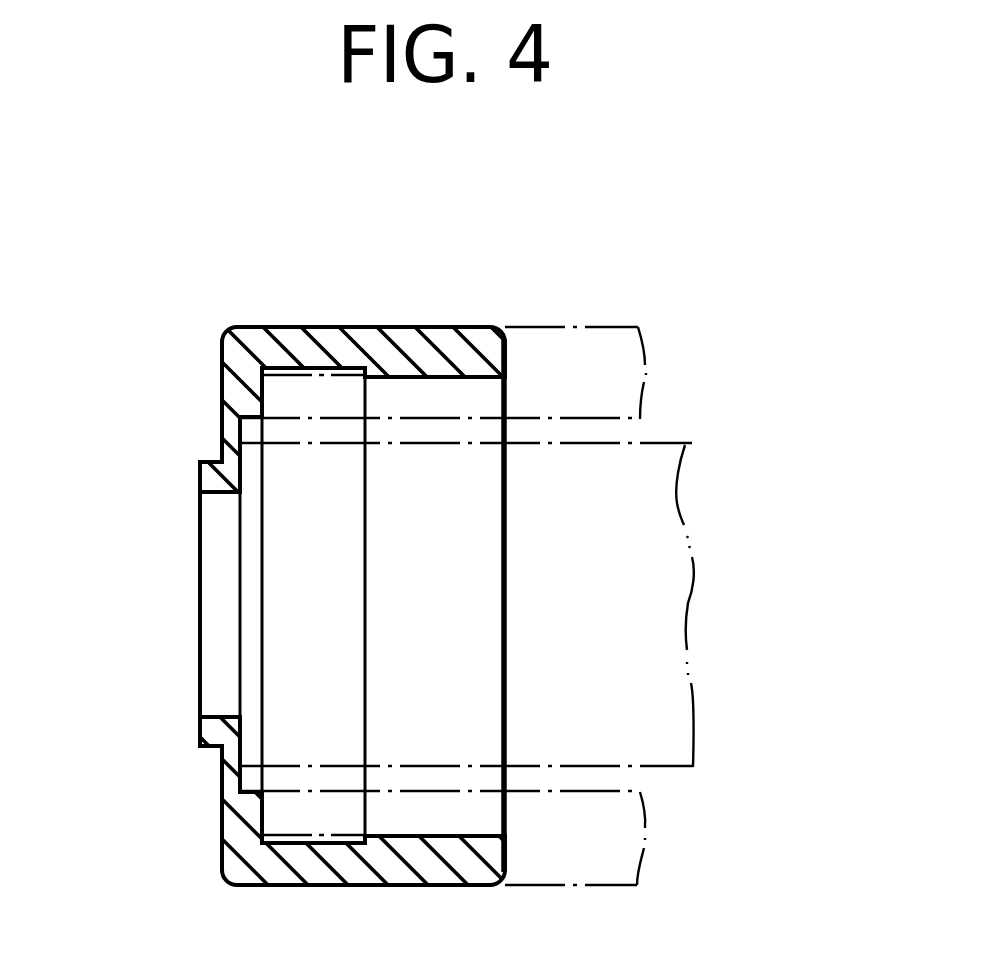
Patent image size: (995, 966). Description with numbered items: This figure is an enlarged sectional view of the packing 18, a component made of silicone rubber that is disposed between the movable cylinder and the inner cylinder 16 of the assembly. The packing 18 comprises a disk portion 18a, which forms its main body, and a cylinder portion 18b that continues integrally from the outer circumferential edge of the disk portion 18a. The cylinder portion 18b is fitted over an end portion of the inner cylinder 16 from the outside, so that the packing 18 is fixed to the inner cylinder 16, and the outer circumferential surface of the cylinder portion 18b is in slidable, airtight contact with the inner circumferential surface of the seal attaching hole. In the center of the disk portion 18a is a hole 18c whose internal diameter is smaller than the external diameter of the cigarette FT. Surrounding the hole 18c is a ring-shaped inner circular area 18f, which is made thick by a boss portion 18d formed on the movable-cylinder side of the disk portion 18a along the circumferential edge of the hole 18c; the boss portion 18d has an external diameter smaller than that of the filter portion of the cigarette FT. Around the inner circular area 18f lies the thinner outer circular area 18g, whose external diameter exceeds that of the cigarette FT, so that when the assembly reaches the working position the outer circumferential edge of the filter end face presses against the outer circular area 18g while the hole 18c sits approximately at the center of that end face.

The packing 18 is at (393, 327).
The disk portion 18a is at (236, 815).
The cylinder portion 18b is at (360, 870).
The hole 18c is at (217, 714).
The boss portion 18d is at (207, 718).
The inner circular area 18f is at (207, 735).
The outer circular area 18g is at (221, 777).
The inner cylinder 16 is at (595, 340).
The cigarette FT is at (657, 607).